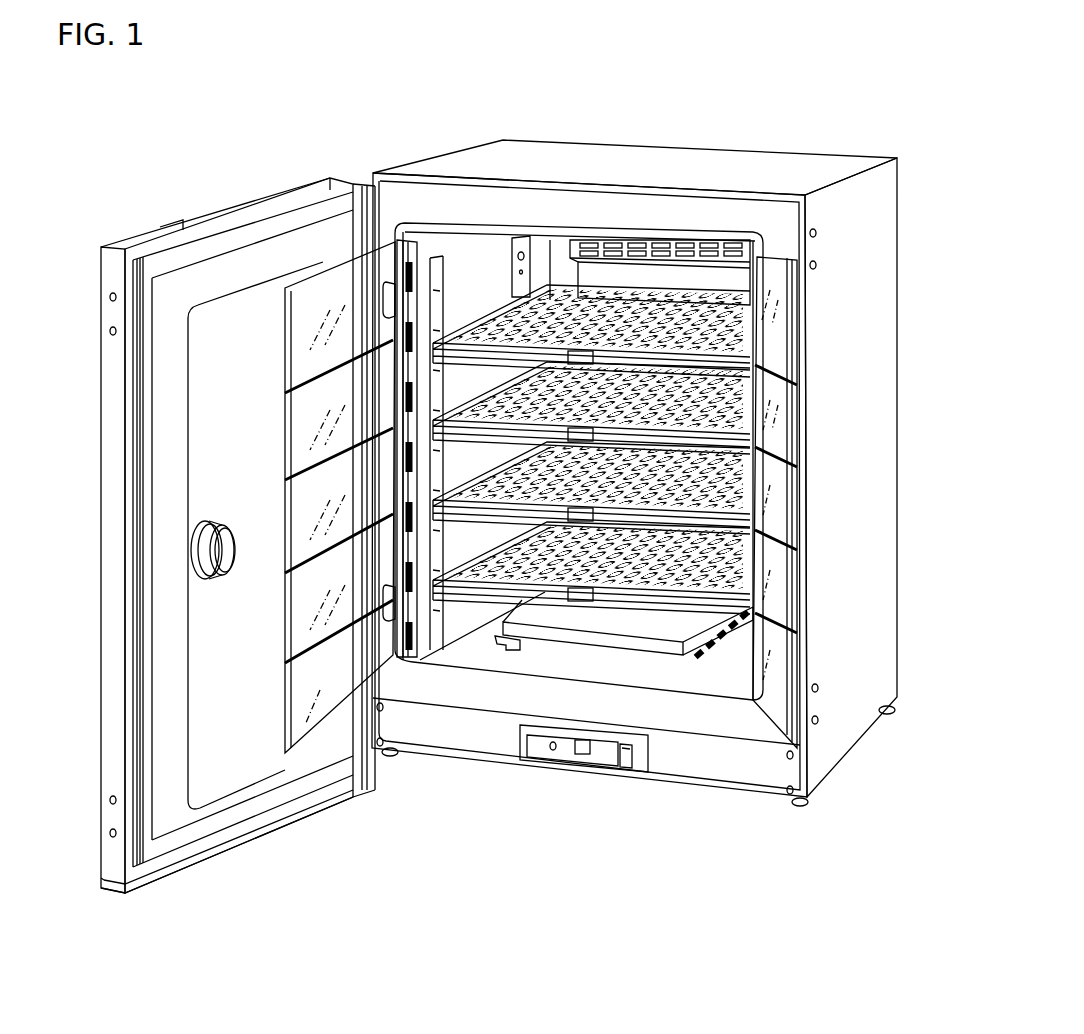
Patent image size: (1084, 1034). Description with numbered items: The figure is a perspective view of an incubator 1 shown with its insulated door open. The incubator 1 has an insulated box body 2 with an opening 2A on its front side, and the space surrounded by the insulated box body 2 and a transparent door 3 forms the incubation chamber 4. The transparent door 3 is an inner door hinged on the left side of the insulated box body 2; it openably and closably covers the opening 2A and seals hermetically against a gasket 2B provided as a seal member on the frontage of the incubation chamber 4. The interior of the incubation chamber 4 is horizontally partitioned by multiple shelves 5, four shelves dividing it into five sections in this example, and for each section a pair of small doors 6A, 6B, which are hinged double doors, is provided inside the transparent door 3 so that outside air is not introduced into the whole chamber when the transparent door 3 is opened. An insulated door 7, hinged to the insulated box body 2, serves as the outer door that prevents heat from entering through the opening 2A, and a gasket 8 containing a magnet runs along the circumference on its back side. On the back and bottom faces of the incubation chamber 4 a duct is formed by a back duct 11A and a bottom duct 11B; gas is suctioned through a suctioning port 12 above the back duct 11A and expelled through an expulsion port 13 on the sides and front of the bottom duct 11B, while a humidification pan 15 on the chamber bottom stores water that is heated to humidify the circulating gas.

The incubator 1 is at (846, 133).
The insulated box body 2 is at (563, 155).
The opening 2A is at (497, 258).
The gasket 2B is at (735, 705).
The transparent door 3 is at (240, 318).
The incubation chamber 4 is at (457, 262).
The shelves 5 is at (497, 320).
The small door 6A is at (320, 297).
The small door 6B is at (770, 415).
The insulated door 7 is at (110, 588).
The gasket 8 is at (175, 830).
The back duct 11A is at (700, 283).
The bottom duct 11B is at (557, 628).
The suctioning port 12 is at (632, 240).
The expulsion port 13 is at (510, 648).
The humidification pan 15 is at (660, 665).